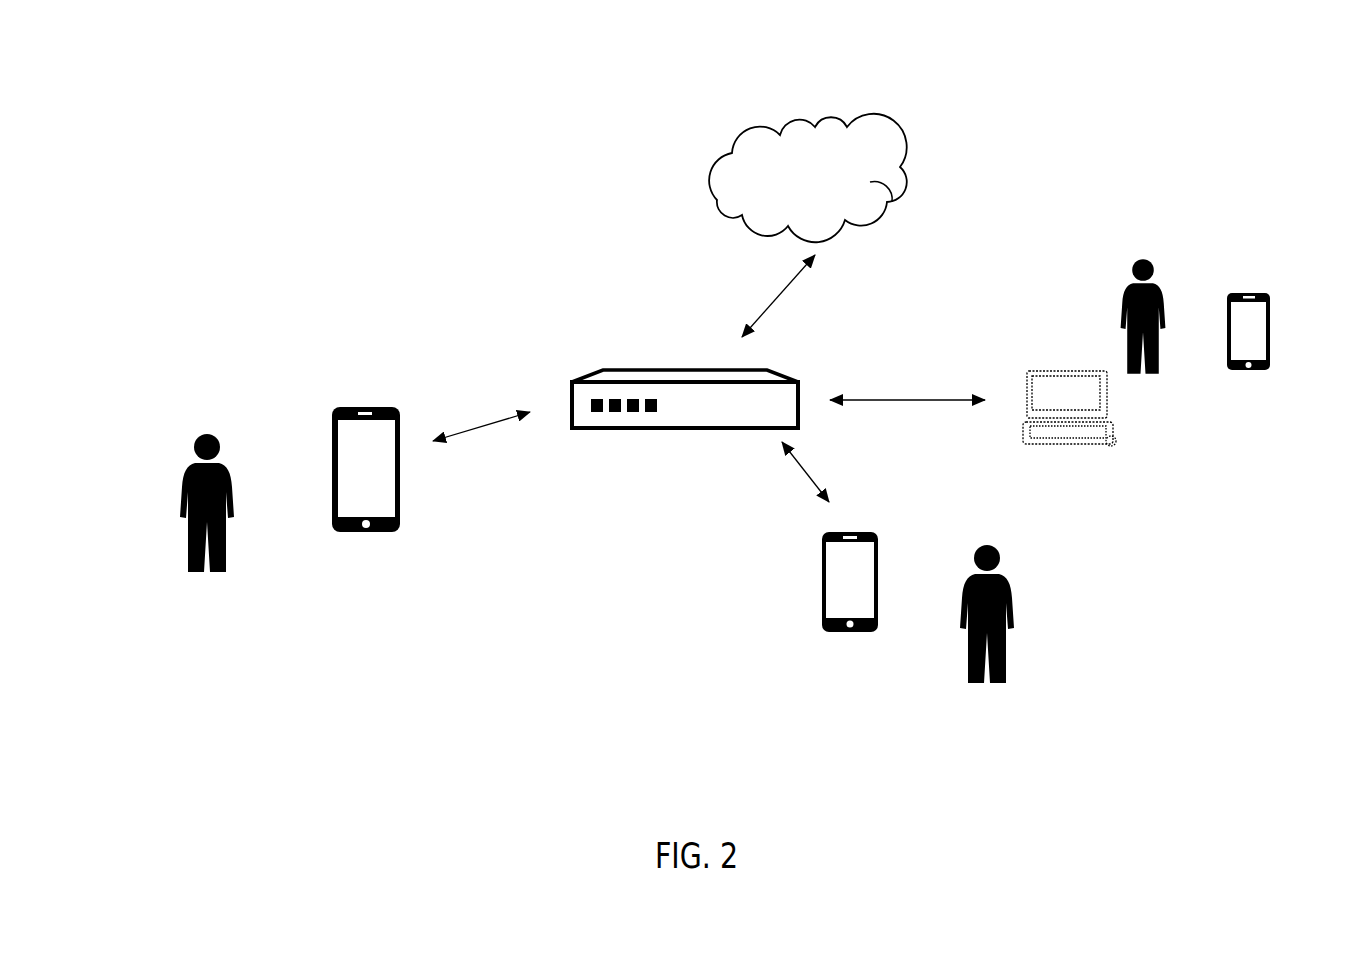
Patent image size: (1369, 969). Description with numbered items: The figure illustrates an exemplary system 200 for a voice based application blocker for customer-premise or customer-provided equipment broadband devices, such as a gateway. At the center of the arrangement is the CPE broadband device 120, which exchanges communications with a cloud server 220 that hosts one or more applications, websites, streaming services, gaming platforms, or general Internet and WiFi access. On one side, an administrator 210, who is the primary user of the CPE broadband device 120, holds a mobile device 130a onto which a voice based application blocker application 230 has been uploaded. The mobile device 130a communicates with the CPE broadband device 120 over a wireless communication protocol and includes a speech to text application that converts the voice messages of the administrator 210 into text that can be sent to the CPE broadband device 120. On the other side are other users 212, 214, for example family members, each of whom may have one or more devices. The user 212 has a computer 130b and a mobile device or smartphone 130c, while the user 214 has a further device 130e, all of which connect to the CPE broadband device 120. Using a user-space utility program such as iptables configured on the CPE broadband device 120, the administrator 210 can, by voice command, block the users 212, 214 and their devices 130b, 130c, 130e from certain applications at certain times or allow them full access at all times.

The system for a voice based application blocker 200 is at (1250, 60).
The CPE broadband device 120 is at (637, 337).
The cloud server 220 is at (843, 198).
The mobile device 130a is at (398, 535).
The computer 130b is at (1093, 480).
The mobile device or smartphone 130c is at (1285, 387).
The device 130e is at (877, 660).
The administrator 210 is at (249, 587).
The user 212 is at (1175, 393).
The user 214 is at (1018, 692).
The voice based application blocker application 230 is at (380, 470).